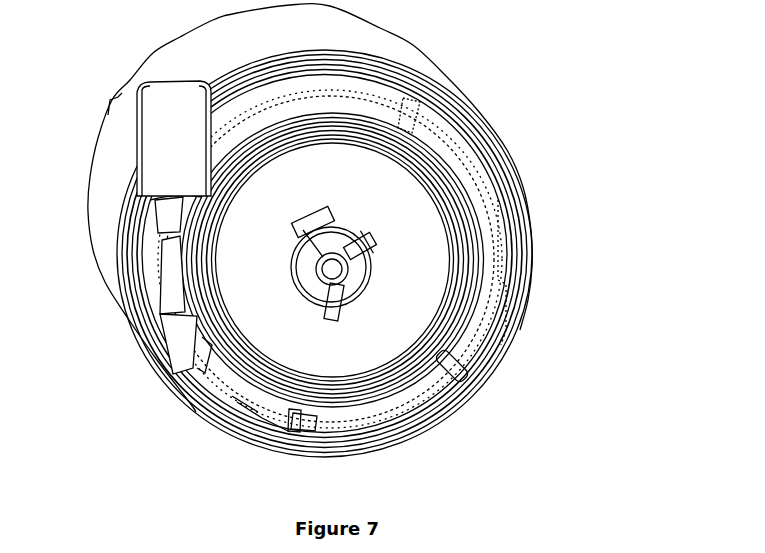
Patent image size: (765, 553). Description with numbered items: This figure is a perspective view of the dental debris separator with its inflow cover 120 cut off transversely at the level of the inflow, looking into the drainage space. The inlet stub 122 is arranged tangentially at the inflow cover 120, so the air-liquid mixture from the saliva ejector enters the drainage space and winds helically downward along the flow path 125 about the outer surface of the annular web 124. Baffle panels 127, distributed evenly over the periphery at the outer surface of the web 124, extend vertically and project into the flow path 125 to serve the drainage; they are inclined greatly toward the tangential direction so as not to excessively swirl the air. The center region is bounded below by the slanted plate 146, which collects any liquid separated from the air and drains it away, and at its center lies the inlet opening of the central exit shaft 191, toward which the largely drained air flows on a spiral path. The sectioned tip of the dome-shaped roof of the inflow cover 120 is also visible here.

The inflow cover 120 is at (349, 268).
The inlet stub 122 is at (177, 98).
The annular web 124 is at (432, 358).
The flow path 125 is at (237, 402).
The baffle panels 127 is at (200, 356).
The slanted plate 146 is at (402, 303).
The exit shaft 191 is at (338, 240).